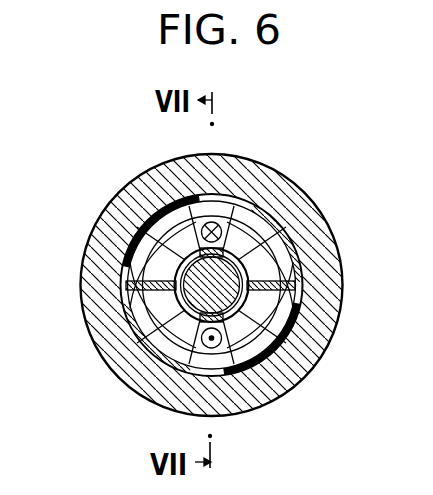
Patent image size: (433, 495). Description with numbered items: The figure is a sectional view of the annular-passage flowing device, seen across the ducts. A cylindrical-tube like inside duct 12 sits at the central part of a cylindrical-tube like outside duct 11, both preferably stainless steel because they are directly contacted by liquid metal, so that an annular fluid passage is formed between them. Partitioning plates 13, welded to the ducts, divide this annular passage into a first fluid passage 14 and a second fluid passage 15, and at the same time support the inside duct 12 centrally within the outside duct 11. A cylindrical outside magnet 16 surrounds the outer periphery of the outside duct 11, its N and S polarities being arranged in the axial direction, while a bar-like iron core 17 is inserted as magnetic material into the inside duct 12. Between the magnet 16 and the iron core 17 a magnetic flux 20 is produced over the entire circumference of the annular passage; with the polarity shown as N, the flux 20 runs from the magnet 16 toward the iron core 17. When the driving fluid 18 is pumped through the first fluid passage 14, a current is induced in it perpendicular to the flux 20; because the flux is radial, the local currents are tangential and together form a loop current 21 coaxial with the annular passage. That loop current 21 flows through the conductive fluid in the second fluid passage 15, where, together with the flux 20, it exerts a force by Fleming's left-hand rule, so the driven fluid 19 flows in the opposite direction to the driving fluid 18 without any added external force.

The outside duct 11 is at (280, 205).
The inside duct 12 is at (113, 293).
The partitioning plates 13 is at (322, 250).
The first fluid passage 14 is at (300, 212).
The second fluid passage 15 is at (262, 398).
The outside magnet 16 is at (257, 163).
The iron core 17 is at (118, 252).
The driving fluid 18 is at (185, 172).
The driven fluid 19 is at (228, 396).
The magnetic flux 20 is at (145, 392).
The loop current 21 is at (275, 357).